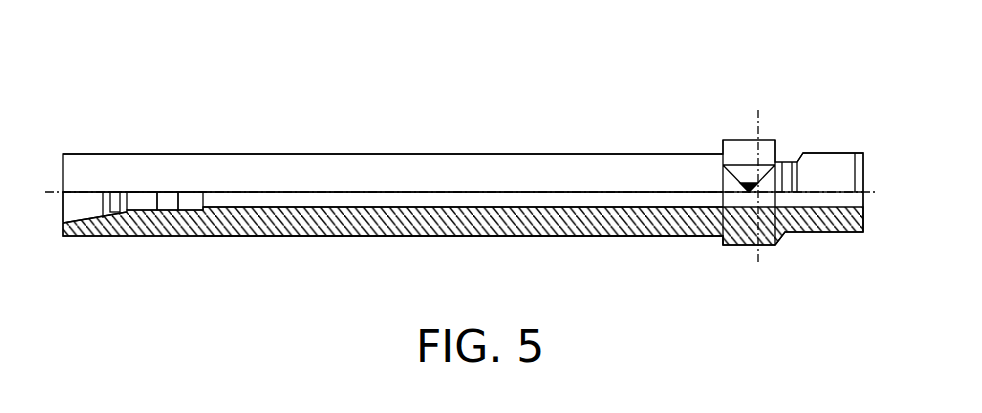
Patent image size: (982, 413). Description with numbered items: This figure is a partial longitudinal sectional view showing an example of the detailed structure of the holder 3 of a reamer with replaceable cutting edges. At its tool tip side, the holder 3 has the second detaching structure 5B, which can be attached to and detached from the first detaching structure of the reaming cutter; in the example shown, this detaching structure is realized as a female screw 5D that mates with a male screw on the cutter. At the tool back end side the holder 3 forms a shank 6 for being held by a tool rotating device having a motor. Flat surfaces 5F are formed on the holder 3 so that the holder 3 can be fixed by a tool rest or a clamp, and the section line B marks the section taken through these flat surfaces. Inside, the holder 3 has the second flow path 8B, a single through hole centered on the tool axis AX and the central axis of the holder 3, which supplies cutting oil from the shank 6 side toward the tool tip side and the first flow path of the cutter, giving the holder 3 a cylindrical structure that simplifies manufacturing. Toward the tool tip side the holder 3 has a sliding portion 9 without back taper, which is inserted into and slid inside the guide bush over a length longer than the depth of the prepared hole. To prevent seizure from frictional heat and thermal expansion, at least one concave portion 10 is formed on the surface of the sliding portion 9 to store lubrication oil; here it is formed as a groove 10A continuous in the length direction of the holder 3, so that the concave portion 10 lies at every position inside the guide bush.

The holder 3 is at (292, 100).
The second detaching structure 5B is at (145, 210).
The female screw 5D is at (165, 193).
The flat surfaces 5F is at (752, 178).
The shank 6 is at (835, 150).
The second flow path 8B is at (525, 200).
The sliding portion 9 is at (243, 172).
The concave portion 10 is at (279, 192).
The groove 10A is at (363, 192).
The tool axis AX is at (863, 188).
The section line B- B is at (758, 104).